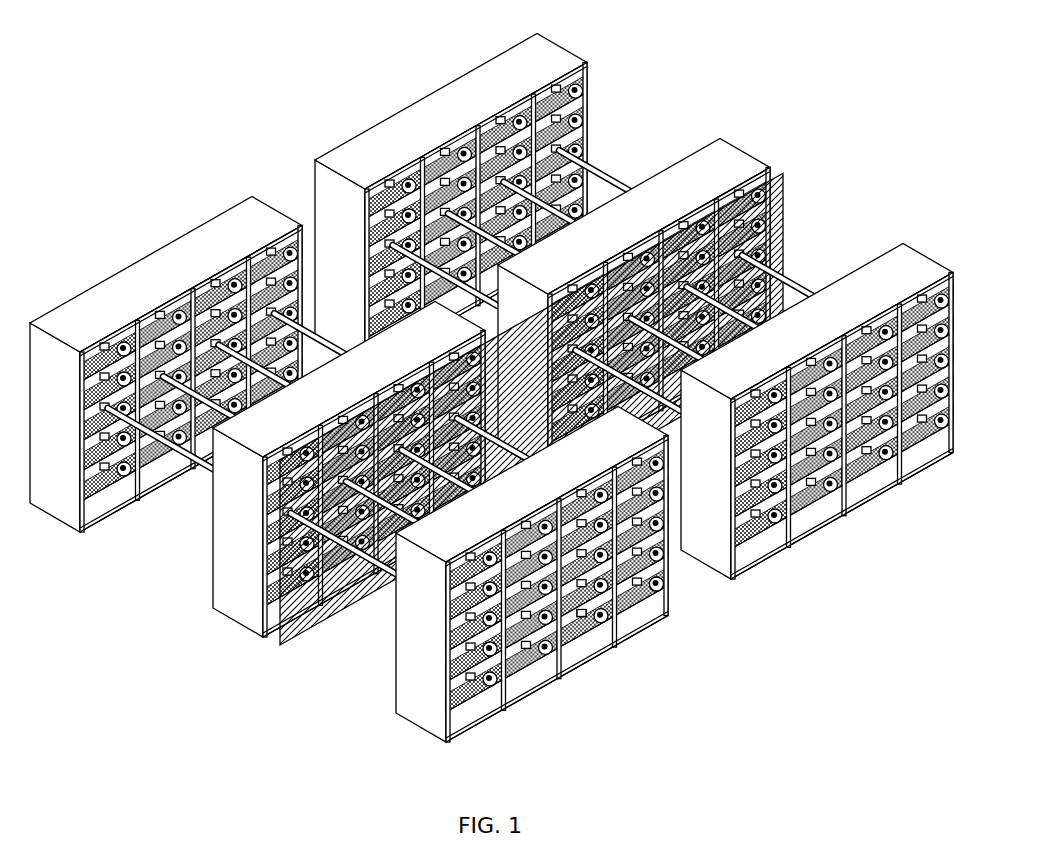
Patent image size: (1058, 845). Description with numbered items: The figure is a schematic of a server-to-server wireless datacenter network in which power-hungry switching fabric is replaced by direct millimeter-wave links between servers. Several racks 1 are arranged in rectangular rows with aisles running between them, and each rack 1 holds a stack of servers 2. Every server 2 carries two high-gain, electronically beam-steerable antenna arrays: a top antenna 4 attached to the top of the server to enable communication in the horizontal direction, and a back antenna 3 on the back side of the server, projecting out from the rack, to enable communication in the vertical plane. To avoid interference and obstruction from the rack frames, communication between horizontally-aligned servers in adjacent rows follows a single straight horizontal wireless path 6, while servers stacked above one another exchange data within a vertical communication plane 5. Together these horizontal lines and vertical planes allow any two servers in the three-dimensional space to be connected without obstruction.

The rack 1 is at (576, 58).
The server 2 is at (848, 467).
The back antenna 3 is at (660, 582).
The top antenna 4 is at (583, 608).
The vertical communication plane 5 is at (280, 643).
The horizontal wireless path 6 is at (200, 464).